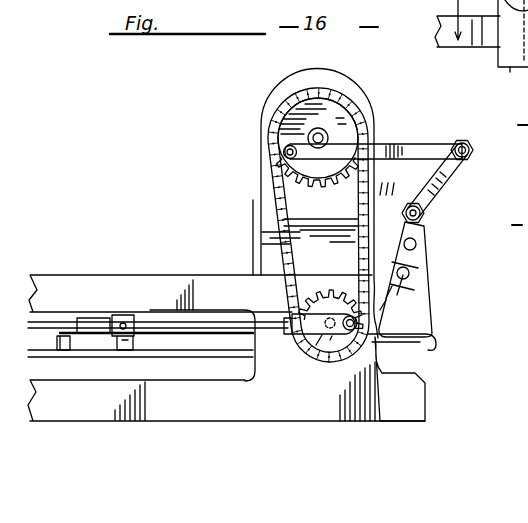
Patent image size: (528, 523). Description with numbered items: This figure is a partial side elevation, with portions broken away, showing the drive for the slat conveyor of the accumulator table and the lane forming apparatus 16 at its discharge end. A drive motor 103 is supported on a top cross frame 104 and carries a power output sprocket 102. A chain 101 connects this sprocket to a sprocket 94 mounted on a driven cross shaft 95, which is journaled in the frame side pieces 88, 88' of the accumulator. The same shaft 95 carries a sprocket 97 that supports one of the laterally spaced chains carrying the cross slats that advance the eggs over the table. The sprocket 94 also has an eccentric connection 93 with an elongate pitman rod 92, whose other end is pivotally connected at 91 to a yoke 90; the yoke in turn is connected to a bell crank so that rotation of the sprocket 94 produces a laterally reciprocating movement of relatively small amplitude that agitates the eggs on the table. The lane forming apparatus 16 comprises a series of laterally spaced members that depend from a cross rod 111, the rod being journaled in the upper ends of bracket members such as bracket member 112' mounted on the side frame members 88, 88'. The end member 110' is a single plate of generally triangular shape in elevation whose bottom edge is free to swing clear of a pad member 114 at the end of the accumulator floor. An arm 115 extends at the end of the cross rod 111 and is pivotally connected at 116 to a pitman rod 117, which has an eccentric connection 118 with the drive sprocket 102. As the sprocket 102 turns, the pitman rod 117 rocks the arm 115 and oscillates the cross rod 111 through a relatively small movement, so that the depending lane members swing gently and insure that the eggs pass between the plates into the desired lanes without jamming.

The lane forming apparatus 16 is at (453, 233).
The frame side piece 88 is at (226, 329).
The frame side piece 88' is at (510, 406).
The yoke 90 is at (92, 320).
The pivotal connection 91 is at (121, 318).
The pitman rod 92 is at (207, 310).
The eccentric connection 93 is at (350, 362).
The sprocket 94 is at (332, 353).
The driven cross shaft 95 is at (309, 361).
The sprocket 97 is at (516, 81).
The chain 101 is at (261, 209).
The power output sprocket 102 is at (333, 110).
The drive motor 103 is at (370, 120).
The top cross frame 104 is at (260, 163).
The end member 110' is at (434, 279).
The cross rod 111 is at (406, 206).
The bracket member 112' is at (494, 182).
The pad member 114 is at (424, 354).
The arm 115 is at (458, 168).
The pivotal connection 116 is at (468, 143).
The pitman rod 117 is at (422, 153).
The eccentric connection 118 is at (283, 149).